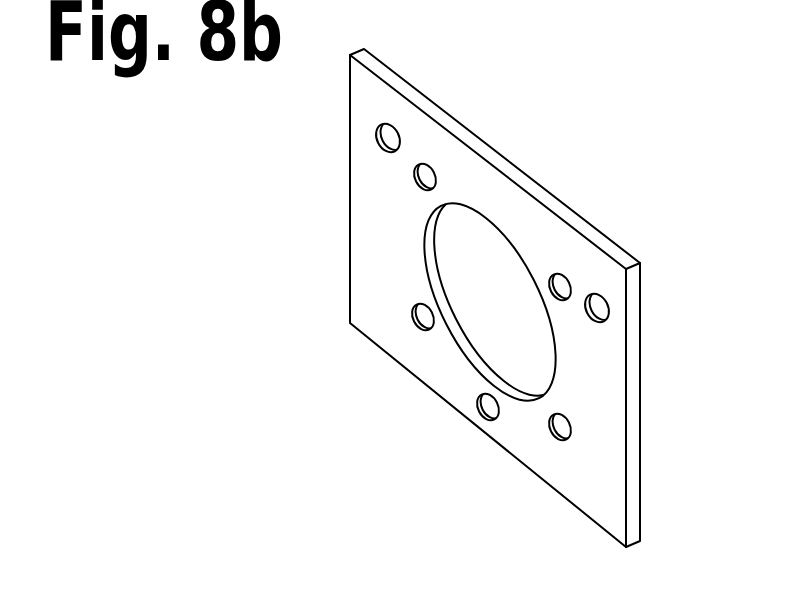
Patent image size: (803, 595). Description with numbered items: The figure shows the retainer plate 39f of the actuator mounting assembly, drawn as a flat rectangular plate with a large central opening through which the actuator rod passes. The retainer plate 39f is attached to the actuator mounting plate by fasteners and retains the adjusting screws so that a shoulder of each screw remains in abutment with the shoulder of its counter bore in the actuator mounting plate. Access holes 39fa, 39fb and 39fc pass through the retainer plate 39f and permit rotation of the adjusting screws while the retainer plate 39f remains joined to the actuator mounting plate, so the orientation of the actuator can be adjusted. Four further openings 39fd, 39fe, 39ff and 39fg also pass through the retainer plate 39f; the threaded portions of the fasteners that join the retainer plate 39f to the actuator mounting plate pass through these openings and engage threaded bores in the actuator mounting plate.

The retainer plate 39f is at (617, 516).
The access hole 39fa is at (384, 144).
The access hole 39fb is at (478, 416).
The access hole 39fc is at (602, 328).
The opening 39fd is at (418, 185).
The opening 39fe is at (408, 311).
The opening 39ff is at (557, 297).
The opening 39fg is at (560, 438).